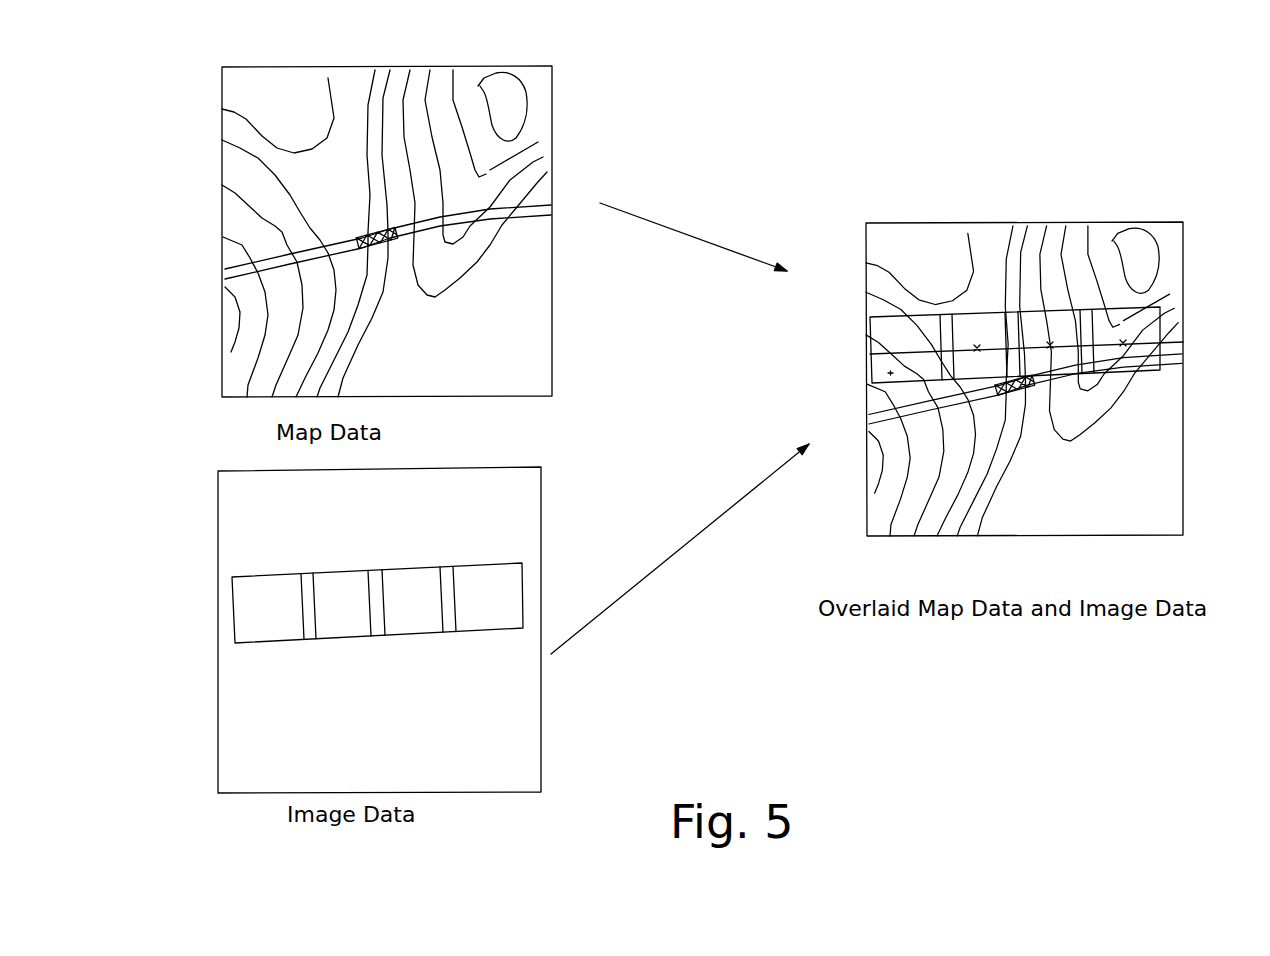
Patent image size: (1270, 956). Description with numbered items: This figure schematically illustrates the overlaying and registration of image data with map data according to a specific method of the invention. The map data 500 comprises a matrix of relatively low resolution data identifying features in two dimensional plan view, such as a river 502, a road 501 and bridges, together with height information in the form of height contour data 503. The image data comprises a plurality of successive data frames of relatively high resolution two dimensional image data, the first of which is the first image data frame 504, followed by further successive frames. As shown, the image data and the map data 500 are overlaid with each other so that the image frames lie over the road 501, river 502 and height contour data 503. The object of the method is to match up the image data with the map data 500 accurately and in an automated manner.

The map data 500 is at (553, 93).
The road 501 is at (316, 248).
The river 502 is at (375, 189).
The height contour data 503 is at (435, 297).
The image data frame I1 504 is at (489, 575).